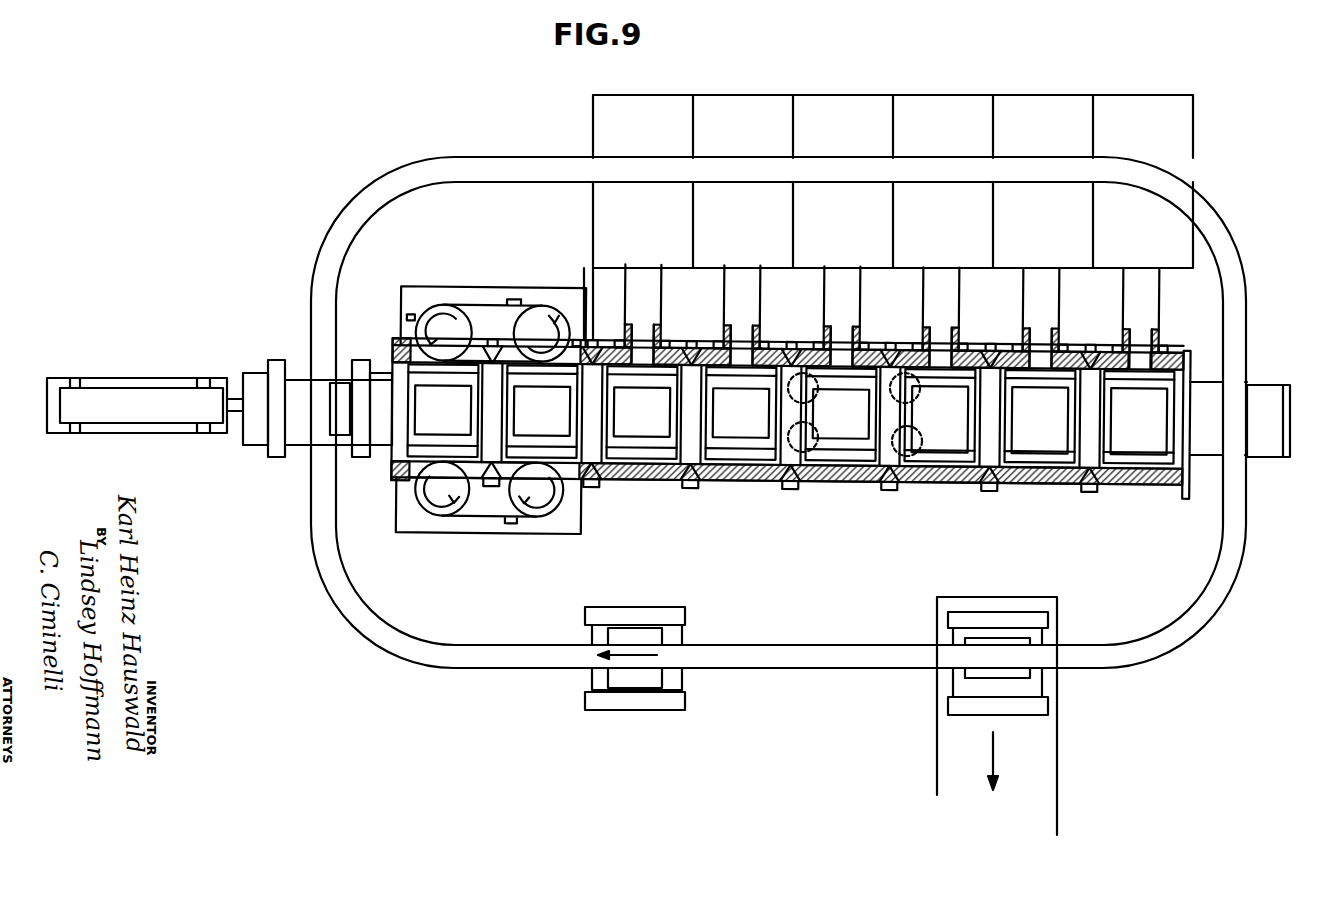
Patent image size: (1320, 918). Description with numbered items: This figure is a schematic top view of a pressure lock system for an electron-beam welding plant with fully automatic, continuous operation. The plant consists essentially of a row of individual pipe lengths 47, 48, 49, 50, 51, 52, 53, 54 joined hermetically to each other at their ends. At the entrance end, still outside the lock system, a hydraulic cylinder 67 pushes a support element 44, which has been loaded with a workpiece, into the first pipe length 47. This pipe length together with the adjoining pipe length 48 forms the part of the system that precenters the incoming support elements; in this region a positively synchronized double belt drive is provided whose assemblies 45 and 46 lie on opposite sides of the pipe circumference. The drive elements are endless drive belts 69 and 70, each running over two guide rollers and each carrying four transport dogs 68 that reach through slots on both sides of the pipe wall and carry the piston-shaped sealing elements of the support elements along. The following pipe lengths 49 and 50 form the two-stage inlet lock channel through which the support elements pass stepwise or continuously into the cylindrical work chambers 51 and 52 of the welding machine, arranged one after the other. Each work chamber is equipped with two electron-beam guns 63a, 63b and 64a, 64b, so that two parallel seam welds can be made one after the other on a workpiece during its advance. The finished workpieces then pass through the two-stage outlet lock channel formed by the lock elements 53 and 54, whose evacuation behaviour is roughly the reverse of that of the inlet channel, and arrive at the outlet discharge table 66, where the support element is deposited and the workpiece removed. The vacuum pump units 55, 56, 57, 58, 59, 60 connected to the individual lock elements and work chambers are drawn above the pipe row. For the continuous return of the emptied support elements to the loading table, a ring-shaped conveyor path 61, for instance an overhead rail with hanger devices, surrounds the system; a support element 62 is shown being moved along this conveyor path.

The support element 44 is at (298, 430).
The belt drive assembly 45 is at (480, 301).
The belt drive assembly 46 is at (467, 518).
The first pipe length 47 is at (415, 425).
The pipe length 48 is at (557, 425).
The pipe length of inlet lock channel 49 is at (656, 432).
The pipe length of inlet lock channel 50 is at (729, 433).
The work chamber 51 is at (845, 433).
The work chamber 52 is at (950, 442).
The lock element 53 is at (1050, 443).
The lock element 54 is at (1130, 450).
The vacuum pump unit 55 is at (632, 113).
The vacuum pump unit 56 is at (737, 110).
The vacuum pump unit 57 is at (832, 118).
The vacuum pump unit 58 is at (940, 113).
The vacuum pump unit 59 is at (1035, 112).
The vacuum pump unit 60 is at (1135, 115).
The ring-shaped conveyor path 61 is at (785, 412).
The support element on conveyor path 62 is at (640, 685).
The electron-beam gun 63a is at (800, 453).
The electron-beam gun 63b is at (811, 372).
The electron-beam gun 64a is at (912, 457).
The electron-beam gun 64b is at (912, 367).
The outlet discharge table 66 is at (1258, 458).
The hydraulic cylinder 67 is at (187, 415).
The transport dog 68 is at (415, 318).
The endless drive belt 69 is at (452, 512).
The endless drive belt 70 is at (500, 300).